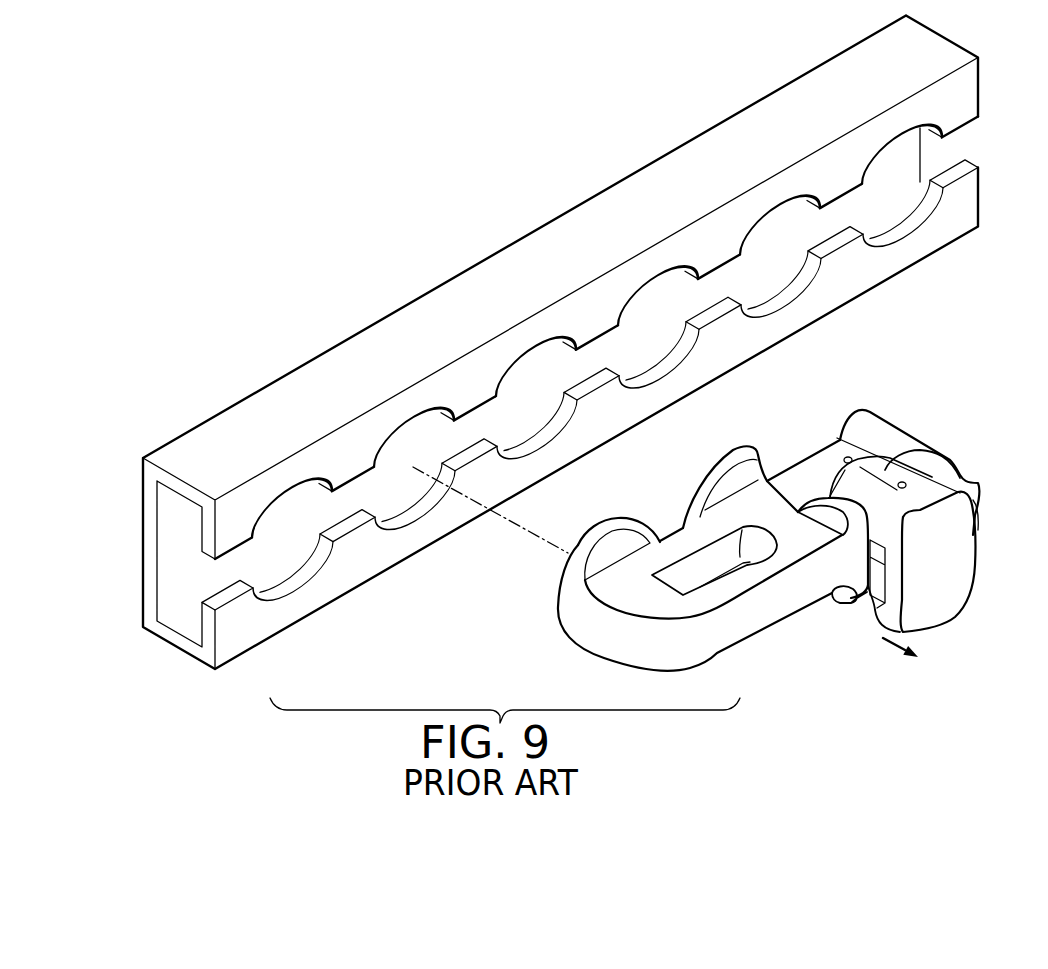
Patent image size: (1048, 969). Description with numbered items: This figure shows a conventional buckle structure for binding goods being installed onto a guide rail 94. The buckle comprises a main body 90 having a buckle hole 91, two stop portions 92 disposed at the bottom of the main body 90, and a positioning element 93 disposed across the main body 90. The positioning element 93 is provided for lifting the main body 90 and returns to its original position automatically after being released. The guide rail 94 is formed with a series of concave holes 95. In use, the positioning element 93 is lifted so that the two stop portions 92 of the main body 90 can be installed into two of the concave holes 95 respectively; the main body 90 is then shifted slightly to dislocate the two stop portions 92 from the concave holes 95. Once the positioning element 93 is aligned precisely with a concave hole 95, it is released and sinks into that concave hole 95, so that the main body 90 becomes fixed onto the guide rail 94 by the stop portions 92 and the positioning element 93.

The main body 90 is at (777, 618).
The buckle hole 91 is at (697, 560).
The stop portions 92 is at (596, 520).
The positioning element 93 is at (955, 575).
The guide rail 94 is at (313, 384).
The concave holes 95 is at (293, 583).